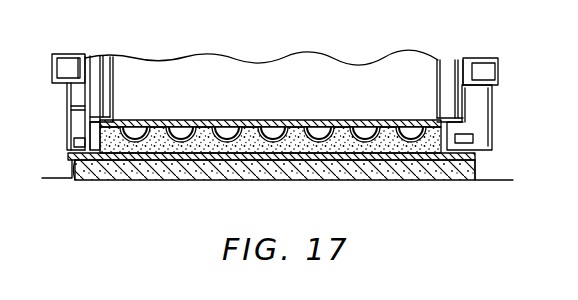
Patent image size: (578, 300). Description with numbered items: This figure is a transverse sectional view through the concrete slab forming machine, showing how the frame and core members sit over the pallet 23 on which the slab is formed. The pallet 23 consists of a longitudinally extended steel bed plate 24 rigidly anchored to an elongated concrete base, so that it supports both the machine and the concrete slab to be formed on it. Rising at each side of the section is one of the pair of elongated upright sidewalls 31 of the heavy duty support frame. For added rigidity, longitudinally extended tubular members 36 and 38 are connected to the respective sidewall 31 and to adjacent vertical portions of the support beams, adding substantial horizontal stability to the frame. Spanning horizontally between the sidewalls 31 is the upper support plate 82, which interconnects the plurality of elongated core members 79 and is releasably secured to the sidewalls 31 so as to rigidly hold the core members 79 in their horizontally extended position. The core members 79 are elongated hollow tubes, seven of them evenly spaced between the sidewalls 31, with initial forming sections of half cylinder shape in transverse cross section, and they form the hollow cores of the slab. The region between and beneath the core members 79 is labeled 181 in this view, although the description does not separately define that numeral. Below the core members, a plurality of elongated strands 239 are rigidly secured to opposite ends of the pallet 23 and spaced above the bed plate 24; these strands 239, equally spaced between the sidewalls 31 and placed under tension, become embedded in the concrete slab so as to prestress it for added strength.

The tubular member 38 is at (52, 58).
The tubular member 36 is at (499, 72).
The sidewall 31 is at (77, 110).
The core member 79 is at (173, 120).
The upper support plate 82 is at (228, 122).
The concrete filling layer 181 is at (344, 178).
The bed plate 24 is at (476, 157).
The pallet 23 is at (443, 170).
The strand 239 is at (153, 177).